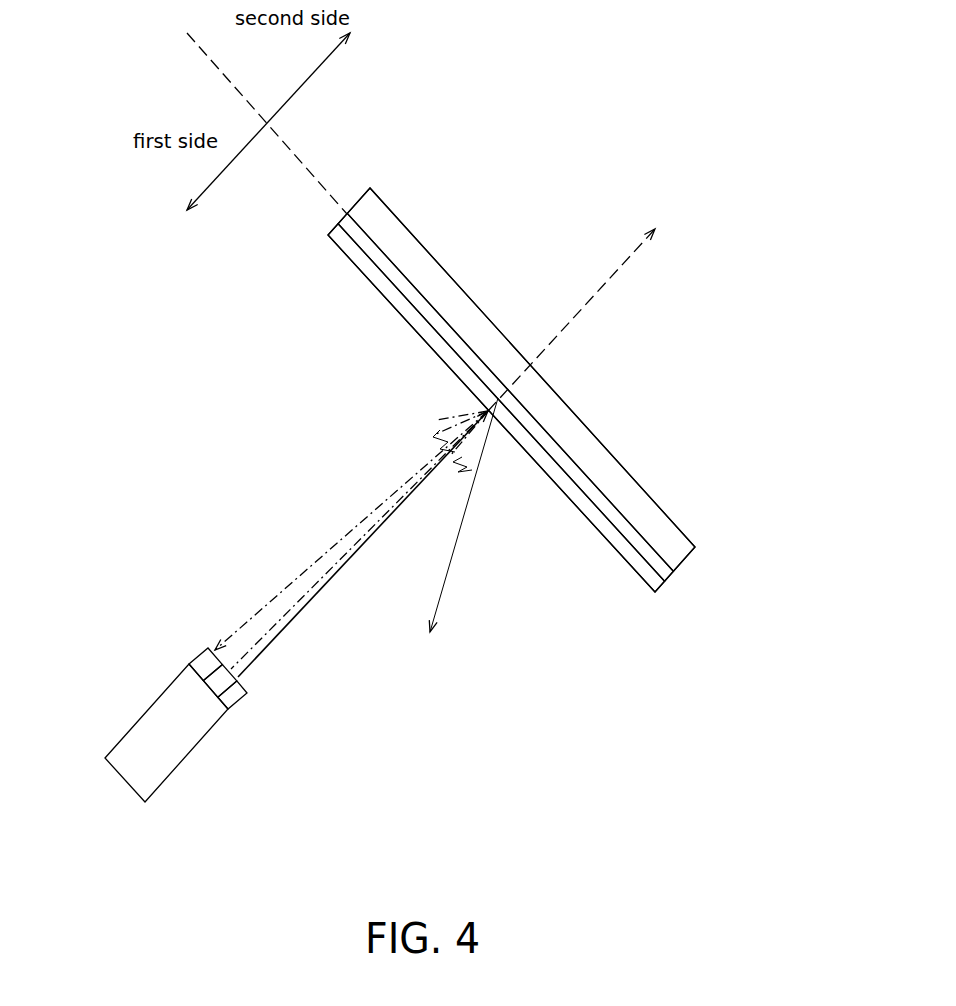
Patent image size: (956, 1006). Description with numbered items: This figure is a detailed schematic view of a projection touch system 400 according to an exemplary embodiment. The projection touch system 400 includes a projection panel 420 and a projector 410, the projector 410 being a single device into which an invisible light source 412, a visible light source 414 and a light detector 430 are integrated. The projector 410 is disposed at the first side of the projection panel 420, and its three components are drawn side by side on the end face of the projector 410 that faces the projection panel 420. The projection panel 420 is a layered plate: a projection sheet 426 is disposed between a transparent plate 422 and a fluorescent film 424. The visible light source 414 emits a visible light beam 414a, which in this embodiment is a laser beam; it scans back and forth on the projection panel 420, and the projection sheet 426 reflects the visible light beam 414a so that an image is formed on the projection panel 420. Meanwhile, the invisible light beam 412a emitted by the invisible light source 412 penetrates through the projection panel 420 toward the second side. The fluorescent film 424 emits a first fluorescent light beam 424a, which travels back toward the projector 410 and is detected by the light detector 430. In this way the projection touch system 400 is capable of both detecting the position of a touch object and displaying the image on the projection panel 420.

The projection touch system 400 is at (652, 835).
The projector 410 is at (204, 714).
The invisible light source 412 is at (239, 691).
The invisible light beam 412a is at (625, 263).
The visible light source 414 is at (221, 669).
The visible light beam 414a is at (445, 582).
The projection panel 420 is at (540, 446).
The transparent plate 422 is at (677, 552).
The fluorescent film 424 is at (496, 441).
The first fluorescent light beam 424a is at (488, 411).
The projection sheet 426 is at (657, 567).
The light detector 430 is at (207, 658).